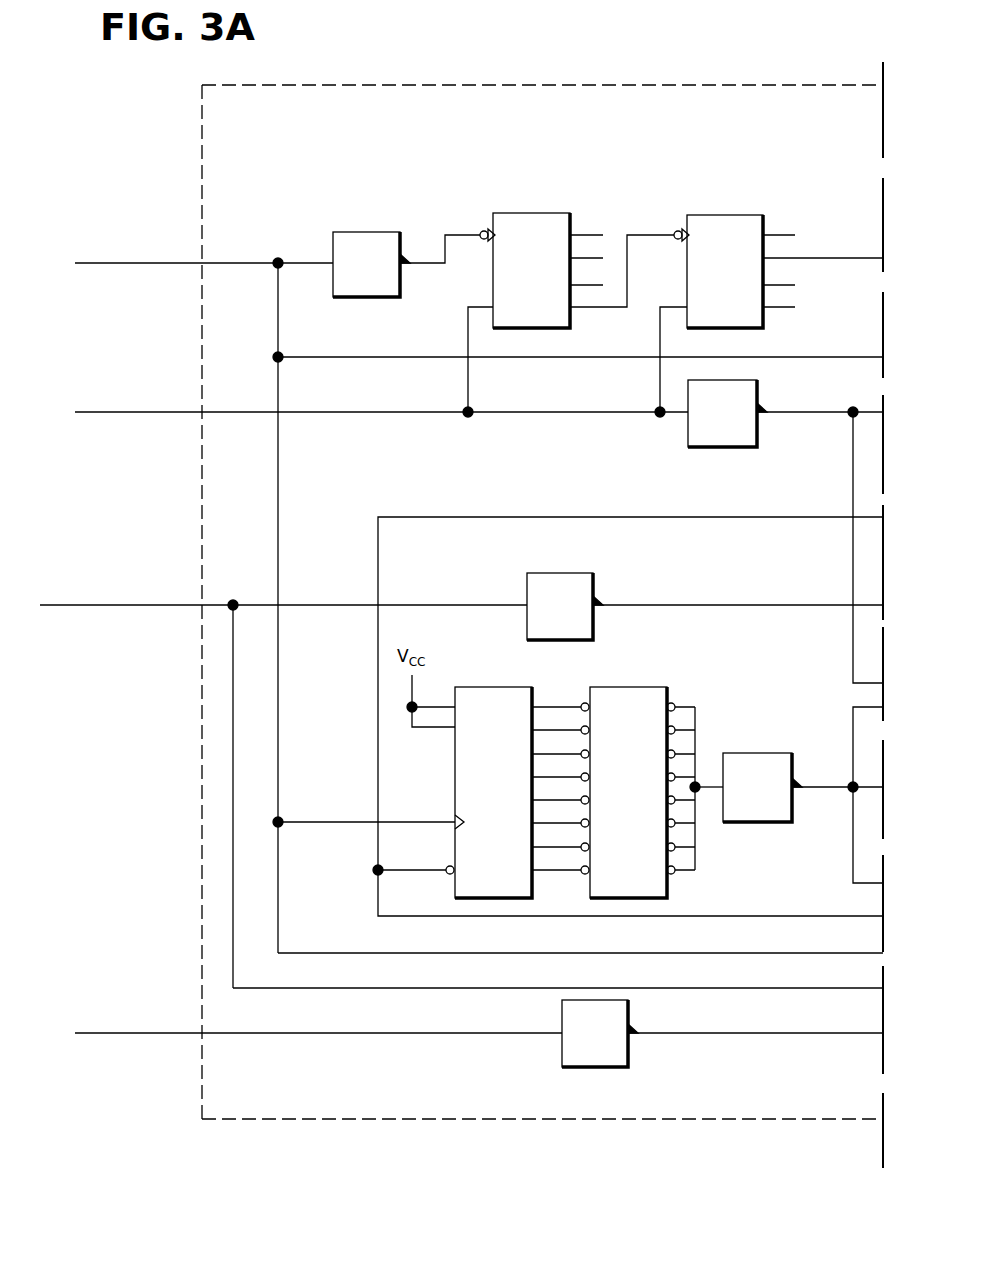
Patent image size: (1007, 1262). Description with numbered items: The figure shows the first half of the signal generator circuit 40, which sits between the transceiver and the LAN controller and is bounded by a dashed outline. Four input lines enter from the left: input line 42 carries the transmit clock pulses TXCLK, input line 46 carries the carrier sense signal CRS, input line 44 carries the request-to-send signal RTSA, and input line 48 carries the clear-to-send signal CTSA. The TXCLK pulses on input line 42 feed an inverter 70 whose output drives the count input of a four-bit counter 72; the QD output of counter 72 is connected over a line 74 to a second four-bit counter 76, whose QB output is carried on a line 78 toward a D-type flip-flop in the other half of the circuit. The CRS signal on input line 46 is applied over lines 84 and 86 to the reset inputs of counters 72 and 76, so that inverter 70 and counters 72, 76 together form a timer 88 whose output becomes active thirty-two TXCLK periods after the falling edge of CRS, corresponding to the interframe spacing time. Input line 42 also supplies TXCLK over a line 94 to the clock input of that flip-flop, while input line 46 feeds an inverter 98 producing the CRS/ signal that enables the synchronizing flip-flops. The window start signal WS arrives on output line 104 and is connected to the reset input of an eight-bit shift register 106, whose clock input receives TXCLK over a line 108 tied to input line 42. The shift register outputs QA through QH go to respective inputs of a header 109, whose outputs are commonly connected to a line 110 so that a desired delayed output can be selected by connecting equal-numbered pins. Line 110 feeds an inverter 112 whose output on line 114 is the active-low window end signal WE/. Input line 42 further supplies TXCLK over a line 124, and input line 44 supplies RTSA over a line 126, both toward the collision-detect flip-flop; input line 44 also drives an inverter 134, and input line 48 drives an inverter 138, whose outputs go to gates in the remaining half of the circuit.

The signal generator circuit 40 is at (617, 85).
The input line 42 is at (157, 263).
The input line 44 is at (157, 605).
The input line 46 is at (157, 412).
The input line 48 is at (157, 1033).
The inverter 70 is at (386, 232).
The 4-bit counter 72 is at (540, 213).
The line 74 is at (640, 235).
The 4-bit counter 76 is at (755, 215).
The line 78 is at (810, 258).
The line 84 is at (468, 307).
The line 86 is at (660, 320).
The timer 88 is at (680, 172).
The line 94 is at (797, 357).
The inverter 98 is at (758, 430).
The output line 104 is at (748, 517).
The 8-bit shift register 106 is at (500, 687).
The line 108 is at (347, 822).
The header 109 is at (655, 687).
The line 110 is at (708, 787).
The inverter 112 is at (752, 753).
The line 114 is at (815, 790).
The line 124 is at (765, 953).
The line 126 is at (765, 988).
The inverter 134 is at (565, 573).
The inverter 138 is at (630, 1052).